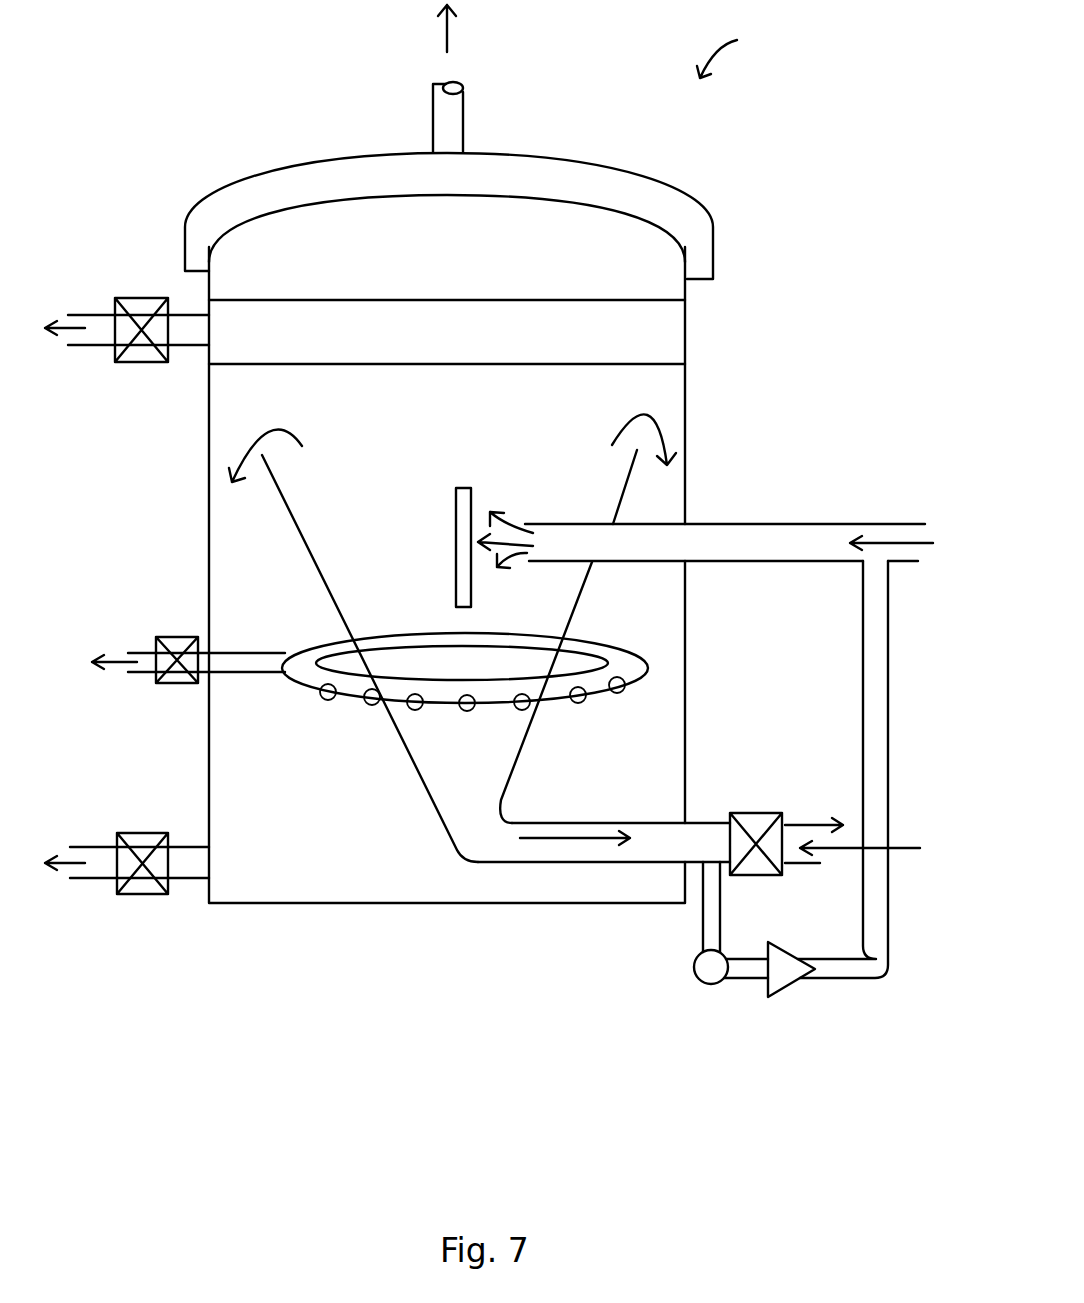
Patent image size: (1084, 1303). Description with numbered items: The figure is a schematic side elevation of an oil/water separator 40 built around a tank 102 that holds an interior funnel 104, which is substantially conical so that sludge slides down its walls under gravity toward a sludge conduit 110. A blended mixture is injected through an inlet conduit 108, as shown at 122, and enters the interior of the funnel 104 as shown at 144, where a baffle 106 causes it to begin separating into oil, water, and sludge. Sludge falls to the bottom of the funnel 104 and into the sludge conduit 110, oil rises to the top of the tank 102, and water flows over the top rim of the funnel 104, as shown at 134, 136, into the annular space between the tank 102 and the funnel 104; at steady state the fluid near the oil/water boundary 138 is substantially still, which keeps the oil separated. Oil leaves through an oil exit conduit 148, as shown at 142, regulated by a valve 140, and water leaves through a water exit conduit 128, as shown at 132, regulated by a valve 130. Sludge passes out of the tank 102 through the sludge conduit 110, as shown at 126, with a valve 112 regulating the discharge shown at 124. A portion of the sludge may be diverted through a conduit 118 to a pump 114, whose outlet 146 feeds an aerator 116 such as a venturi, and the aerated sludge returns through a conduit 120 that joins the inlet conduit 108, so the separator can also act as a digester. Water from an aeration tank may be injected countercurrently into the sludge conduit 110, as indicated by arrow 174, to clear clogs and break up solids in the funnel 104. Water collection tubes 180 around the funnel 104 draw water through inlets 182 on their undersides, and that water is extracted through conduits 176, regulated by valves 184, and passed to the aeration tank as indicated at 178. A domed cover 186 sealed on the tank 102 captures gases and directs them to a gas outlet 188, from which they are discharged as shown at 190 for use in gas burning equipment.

The oil/water separator 40 is at (741, 51).
The tank 102 is at (207, 510).
The funnel 104 is at (402, 750).
The baffle 106 is at (455, 525).
The inlet conduit 108 is at (785, 523).
The sludge conduit 110 is at (572, 820).
The valve 112 is at (753, 810).
The pump 114 is at (695, 973).
The aerator 116 is at (792, 992).
The conduit 118 is at (702, 918).
The conduit 120 is at (863, 647).
The blended mixture injection 122 is at (892, 540).
The sludge outflow 124 is at (827, 820).
The sludge passage 126 is at (588, 843).
The water exit conduit 128 is at (187, 882).
The valve 130 is at (142, 832).
The water outflow 132 is at (67, 868).
The water overflow 134 is at (302, 445).
The water overflow 136 is at (627, 422).
The oil/water boundary 138 is at (640, 362).
The valve 140 is at (140, 297).
The oil outflow 142 is at (70, 333).
The blended mixture entry 144 is at (520, 555).
The pump outlet 146 is at (747, 980).
The oil exit conduit 148 is at (185, 345).
The countercurrent water injection arrow 174 is at (903, 847).
The conduits 176 is at (137, 675).
The water passage to aeration tank 178 is at (113, 657).
The water collection tubes 180 is at (317, 638).
The inlets 182 is at (585, 700).
The valves 184 is at (182, 685).
The cover 186 is at (307, 160).
The gas outlet 188 is at (465, 115).
The gas discharge 190 is at (450, 32).